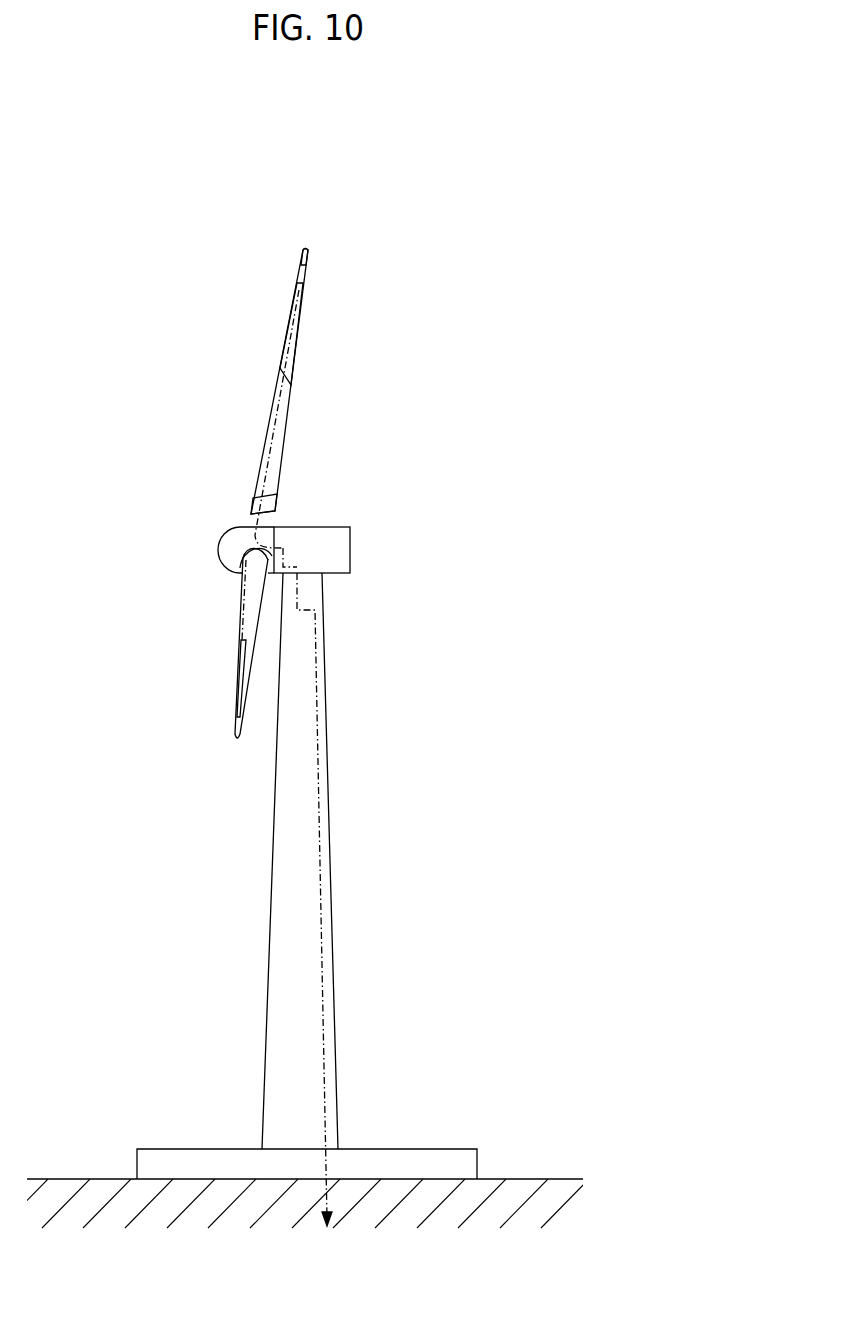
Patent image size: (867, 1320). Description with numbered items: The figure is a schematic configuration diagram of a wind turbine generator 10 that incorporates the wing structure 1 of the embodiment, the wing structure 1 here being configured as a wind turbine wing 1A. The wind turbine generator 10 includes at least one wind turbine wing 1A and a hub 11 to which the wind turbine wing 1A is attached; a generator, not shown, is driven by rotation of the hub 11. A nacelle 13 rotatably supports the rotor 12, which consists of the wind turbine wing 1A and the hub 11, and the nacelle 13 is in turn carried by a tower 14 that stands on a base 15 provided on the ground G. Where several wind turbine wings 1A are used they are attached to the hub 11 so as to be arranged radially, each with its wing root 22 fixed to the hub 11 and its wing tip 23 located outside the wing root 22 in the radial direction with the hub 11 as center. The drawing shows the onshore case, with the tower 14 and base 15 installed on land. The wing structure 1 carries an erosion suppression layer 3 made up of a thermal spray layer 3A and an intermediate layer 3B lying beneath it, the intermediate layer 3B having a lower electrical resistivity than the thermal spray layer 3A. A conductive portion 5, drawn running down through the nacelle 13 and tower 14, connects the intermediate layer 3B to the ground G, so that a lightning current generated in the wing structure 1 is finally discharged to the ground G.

The wind turbine generator 10 is at (480, 354).
The wing structure 1 is at (241, 455).
The wind turbine wing 1A is at (296, 378).
The erosion suppression layer 3 is at (195, 500).
The thermal spray layer 3A is at (195, 500).
The intermediate layer 3B is at (279, 356).
The conductive portion 5 is at (321, 878).
The hub 11 is at (223, 547).
The rotor 12 is at (185, 521).
The nacelle 13 is at (330, 527).
The tower 14 is at (268, 975).
The base 15 is at (406, 1149).
The wing root 22 is at (243, 512).
The wing tip 23 is at (308, 246).
The ground G is at (505, 1190).